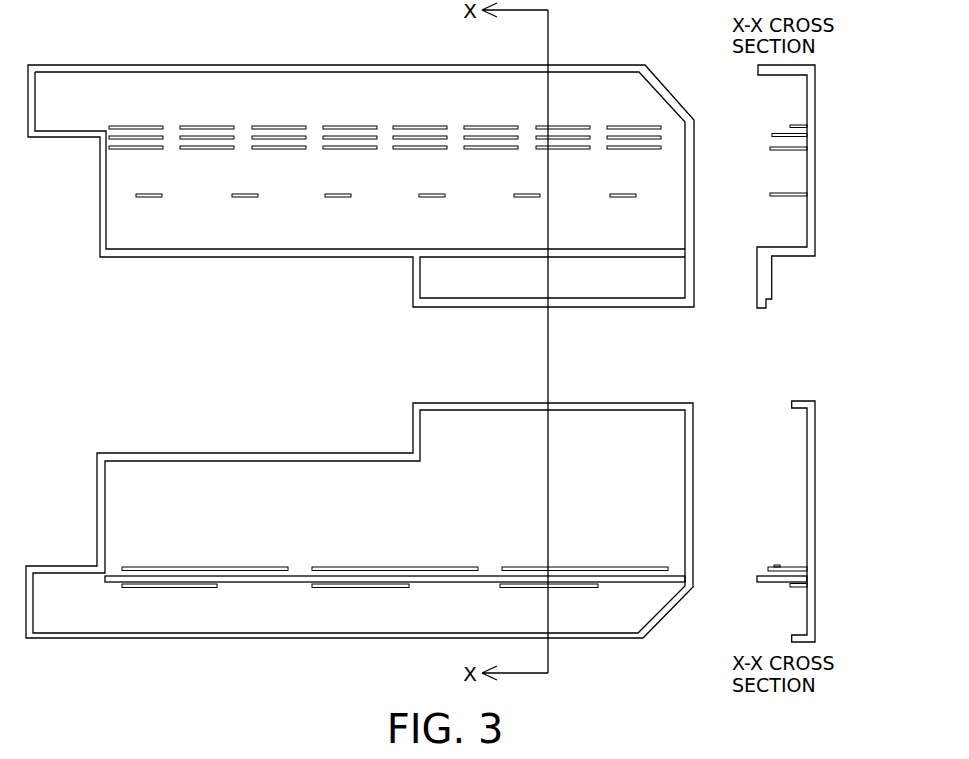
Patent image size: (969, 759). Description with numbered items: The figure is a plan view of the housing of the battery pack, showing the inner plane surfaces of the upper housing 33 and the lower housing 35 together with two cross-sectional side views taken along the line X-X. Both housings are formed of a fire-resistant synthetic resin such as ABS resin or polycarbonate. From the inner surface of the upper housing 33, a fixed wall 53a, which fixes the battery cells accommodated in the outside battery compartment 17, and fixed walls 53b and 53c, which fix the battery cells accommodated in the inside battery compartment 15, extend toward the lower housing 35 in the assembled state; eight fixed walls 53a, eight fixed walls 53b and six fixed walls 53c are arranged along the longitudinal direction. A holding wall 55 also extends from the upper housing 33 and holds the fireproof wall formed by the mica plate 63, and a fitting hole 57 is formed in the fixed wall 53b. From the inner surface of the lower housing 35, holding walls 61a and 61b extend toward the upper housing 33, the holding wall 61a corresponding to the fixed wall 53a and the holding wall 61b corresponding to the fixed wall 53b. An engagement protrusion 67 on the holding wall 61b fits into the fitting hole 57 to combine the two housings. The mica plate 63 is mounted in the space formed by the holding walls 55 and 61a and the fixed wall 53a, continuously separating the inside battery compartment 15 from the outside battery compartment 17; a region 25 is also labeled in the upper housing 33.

The inside battery compartment 15 is at (327, 175).
The outside battery compartment 17 is at (327, 105).
The opening portion 25 is at (493, 287).
The upper housing 33 is at (120, 257).
The lower housing 35 is at (120, 453).
The fixed wall 53a is at (790, 126).
The fixed wall 53b is at (797, 151).
The fixed wall 53c is at (790, 197).
The holding wall 55 is at (772, 135).
The fitting hole 57 is at (776, 188).
The holding wall 61a is at (793, 588).
The holding wall 61b is at (768, 567).
The mica plate 63 is at (757, 579).
The engagement protrusion 67 is at (777, 565).